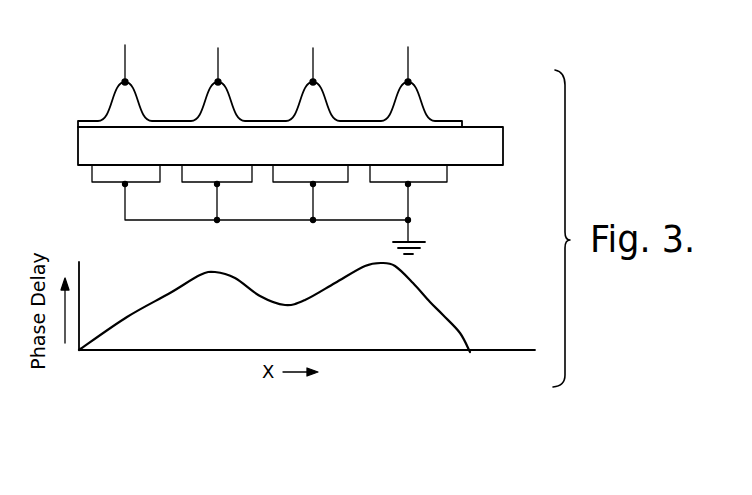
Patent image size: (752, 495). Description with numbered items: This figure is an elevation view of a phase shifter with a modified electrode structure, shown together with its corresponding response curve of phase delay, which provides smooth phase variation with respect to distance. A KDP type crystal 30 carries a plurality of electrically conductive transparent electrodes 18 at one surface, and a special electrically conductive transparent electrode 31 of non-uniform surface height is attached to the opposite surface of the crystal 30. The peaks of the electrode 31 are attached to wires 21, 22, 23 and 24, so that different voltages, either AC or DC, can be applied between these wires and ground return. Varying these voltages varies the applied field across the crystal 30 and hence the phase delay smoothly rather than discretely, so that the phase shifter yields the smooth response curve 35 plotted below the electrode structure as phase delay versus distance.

The electrically conductive transparent electrodes 18 is at (205, 177).
The wire 21 is at (125, 55).
The wire 22 is at (218, 60).
The wire 23 is at (313, 63).
The wire 24 is at (410, 55).
The KDP type crystal 30 is at (490, 137).
The special electrically conductive transparent electrode 31 is at (417, 112).
The response curve 35 is at (428, 295).